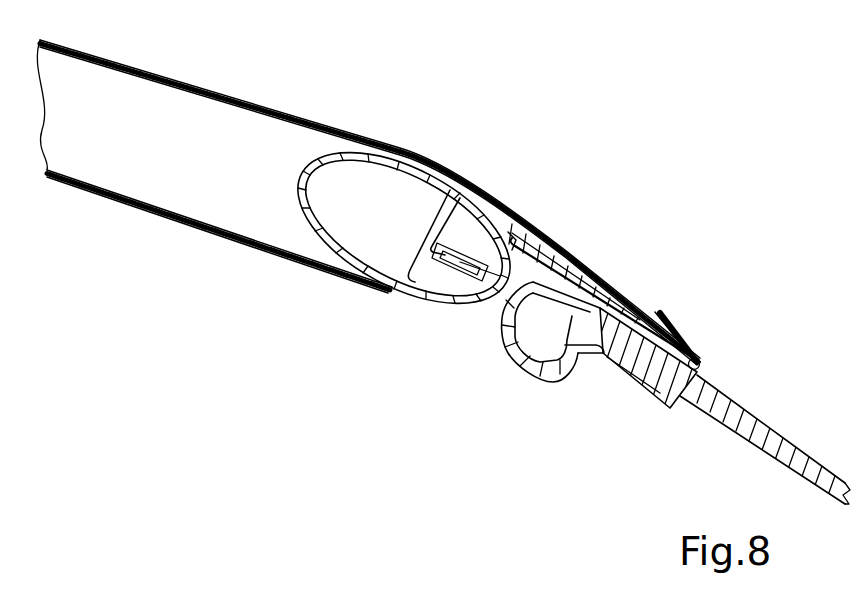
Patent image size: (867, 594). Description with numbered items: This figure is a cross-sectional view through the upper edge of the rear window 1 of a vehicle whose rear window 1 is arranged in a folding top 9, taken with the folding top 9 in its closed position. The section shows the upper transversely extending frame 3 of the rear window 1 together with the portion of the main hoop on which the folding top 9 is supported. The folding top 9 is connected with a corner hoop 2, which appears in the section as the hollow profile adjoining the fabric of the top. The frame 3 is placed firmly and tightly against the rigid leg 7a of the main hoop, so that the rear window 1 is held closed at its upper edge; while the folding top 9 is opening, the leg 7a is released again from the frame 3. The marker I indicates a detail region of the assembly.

The folding top 9 is at (215, 97).
The corner hoop 2 is at (421, 158).
The rigid leg 7a is at (564, 266).
The upper transversely extending frame 3 is at (570, 381).
The rear window 1 is at (760, 420).
The detail marker I is at (738, 191).